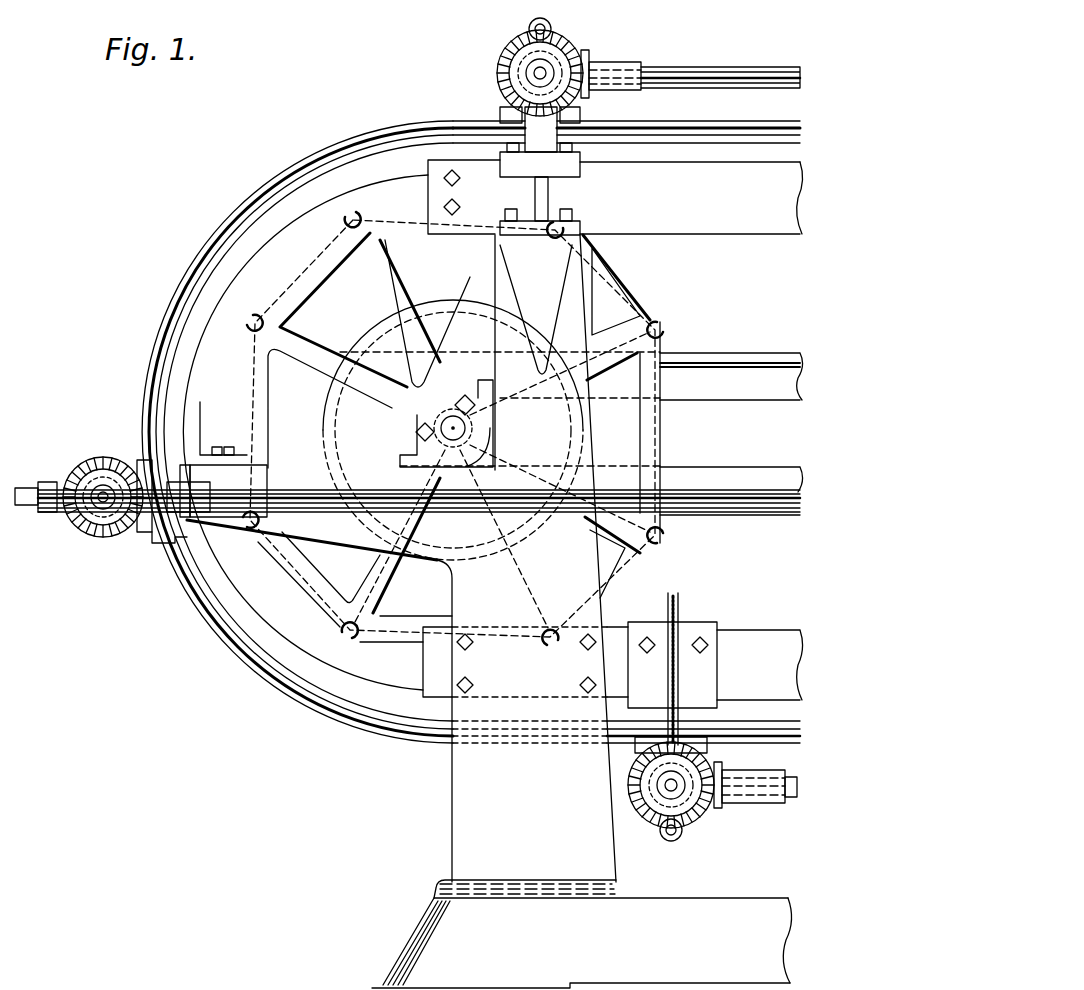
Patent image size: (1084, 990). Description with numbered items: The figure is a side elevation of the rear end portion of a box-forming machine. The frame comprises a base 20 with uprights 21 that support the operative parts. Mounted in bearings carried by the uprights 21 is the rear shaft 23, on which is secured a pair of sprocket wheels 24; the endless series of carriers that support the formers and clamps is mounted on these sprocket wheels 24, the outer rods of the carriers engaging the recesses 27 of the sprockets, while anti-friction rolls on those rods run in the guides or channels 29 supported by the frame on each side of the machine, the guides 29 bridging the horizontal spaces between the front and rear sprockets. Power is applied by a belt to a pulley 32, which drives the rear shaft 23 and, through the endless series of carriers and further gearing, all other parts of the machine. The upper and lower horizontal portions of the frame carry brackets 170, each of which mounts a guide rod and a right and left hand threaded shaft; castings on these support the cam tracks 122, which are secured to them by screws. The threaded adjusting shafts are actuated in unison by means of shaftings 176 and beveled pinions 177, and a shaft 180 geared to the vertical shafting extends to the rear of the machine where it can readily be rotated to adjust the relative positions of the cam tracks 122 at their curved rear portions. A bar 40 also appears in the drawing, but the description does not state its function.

The base 20 is at (582, 943).
The uprights 21 is at (462, 818).
The rear shaft 23 is at (408, 429).
The sprocket wheels 24 is at (327, 594).
The recesses 27 is at (663, 333).
The guides or channels 29 is at (613, 434).
The pulley 32 is at (443, 300).
The bar 40 is at (740, 362).
The cam tracks 122 is at (738, 136).
The brackets 170 is at (548, 133).
The shaftings 176 is at (730, 73).
The beveled pinions 177 is at (578, 50).
The shaft 180 is at (778, 516).